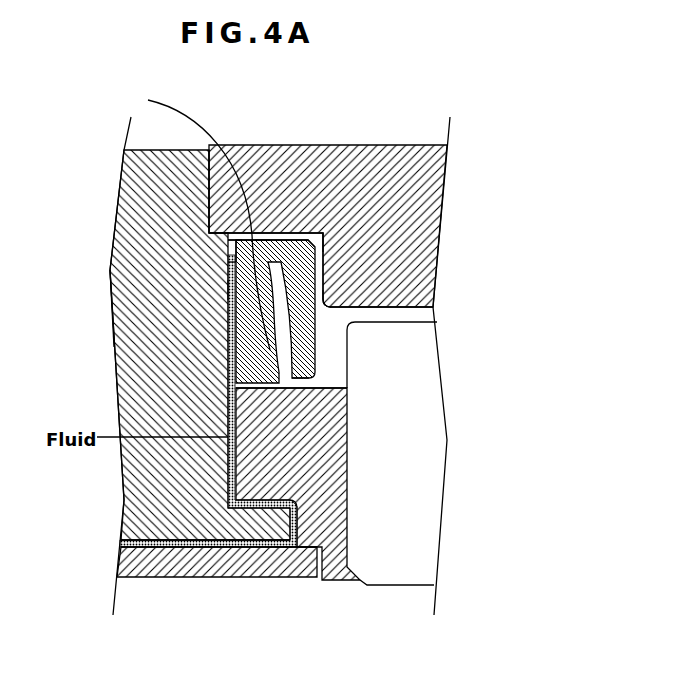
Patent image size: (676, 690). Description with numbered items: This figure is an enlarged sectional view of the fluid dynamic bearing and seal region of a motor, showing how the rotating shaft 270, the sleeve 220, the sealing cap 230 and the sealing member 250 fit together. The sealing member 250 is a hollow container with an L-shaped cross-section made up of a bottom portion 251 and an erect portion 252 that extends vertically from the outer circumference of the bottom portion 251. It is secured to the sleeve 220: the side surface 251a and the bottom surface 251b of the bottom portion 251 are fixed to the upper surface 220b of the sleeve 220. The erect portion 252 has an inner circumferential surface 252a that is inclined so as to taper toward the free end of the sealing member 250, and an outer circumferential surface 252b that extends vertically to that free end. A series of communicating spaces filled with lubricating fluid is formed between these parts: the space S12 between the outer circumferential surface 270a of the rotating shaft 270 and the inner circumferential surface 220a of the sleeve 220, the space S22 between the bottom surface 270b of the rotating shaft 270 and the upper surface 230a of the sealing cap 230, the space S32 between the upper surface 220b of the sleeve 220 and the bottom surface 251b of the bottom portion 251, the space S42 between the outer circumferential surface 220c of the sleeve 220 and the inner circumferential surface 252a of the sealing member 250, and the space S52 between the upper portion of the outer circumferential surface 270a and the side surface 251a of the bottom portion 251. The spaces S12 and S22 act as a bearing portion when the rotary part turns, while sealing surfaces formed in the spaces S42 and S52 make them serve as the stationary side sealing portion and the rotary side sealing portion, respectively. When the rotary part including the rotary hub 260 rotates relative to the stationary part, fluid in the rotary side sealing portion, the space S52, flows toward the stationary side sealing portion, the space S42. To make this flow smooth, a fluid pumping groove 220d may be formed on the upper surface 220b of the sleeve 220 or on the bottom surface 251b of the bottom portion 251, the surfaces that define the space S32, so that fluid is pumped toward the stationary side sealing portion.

The sleeve 220 is at (338, 486).
The inner circumferential surface of the sleeve 220a is at (239, 397).
The upper surface of the sleeve 220b is at (236, 252).
The outer circumferential surface of the sleeve 220c is at (231, 320).
The fluid pumping groove 220d is at (181, 216).
The sealing cap 230 is at (233, 590).
The upper surface of the sealing cap 230a is at (172, 550).
The sealing member 250 is at (323, 320).
The bottom portion 251 is at (302, 202).
The side surface of the bottom portion 251a is at (238, 245).
The bottom surface of the bottom portion 251b is at (337, 218).
The erect portion 252 is at (310, 340).
The inner circumferential surface of the erect portion 252a is at (312, 398).
The outer circumferential surface of the erect portion 252b is at (316, 272).
The rotary hub 260 is at (312, 139).
The rotating shaft 270 is at (185, 390).
The outer circumferential surface of the rotating shaft 270a is at (228, 347).
The bottom surface of the rotating shaft 270b is at (155, 518).
The space between shaft outer surface and sleeve inner surface S12 is at (228, 289).
The space between shaft bottom surface and sealing cap upper surface S22 is at (283, 550).
The space between sleeve upper surface and sealing member bottom surface S32 is at (262, 240).
The space between sleeve outer surface and sealing member inner surface S42 is at (232, 262).
The space between shaft upper outer surface and bottom portion side surface S52 is at (209, 185).